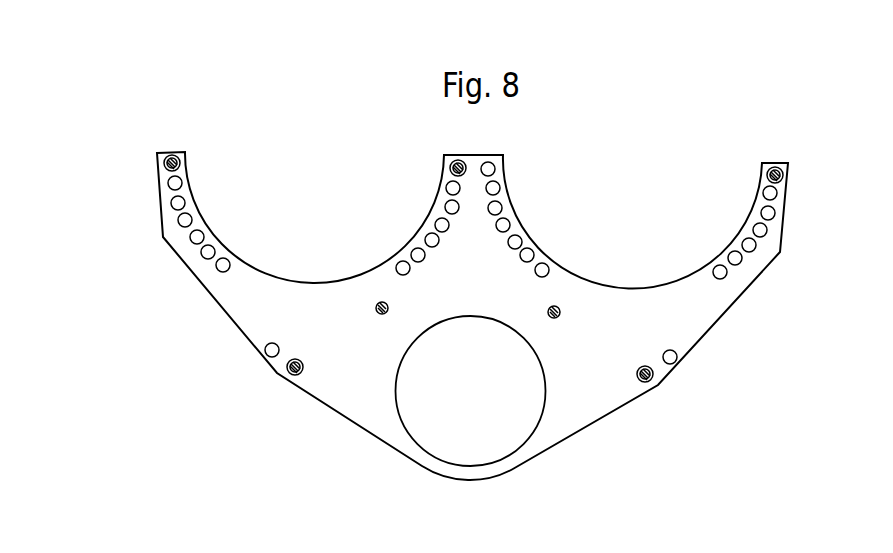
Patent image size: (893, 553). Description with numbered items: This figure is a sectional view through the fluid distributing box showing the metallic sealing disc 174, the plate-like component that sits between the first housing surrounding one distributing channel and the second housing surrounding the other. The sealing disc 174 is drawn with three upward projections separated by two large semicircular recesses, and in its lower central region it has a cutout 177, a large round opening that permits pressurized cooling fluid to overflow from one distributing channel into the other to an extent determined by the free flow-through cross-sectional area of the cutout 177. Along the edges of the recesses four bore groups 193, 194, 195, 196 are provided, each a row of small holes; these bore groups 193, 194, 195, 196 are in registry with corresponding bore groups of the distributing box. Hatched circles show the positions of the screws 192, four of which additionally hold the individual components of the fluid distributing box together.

The metallic sealing disc 174 is at (335, 415).
The cutout 177 is at (418, 441).
The screws 192 is at (288, 371).
The bore group 193 is at (222, 258).
The bore group 194 is at (403, 262).
The bore group 195 is at (547, 263).
The bore group 196 is at (718, 266).